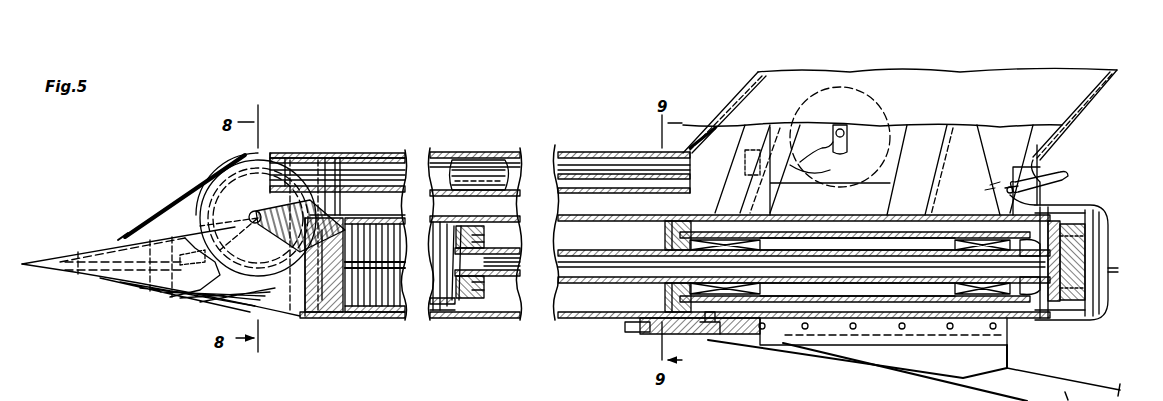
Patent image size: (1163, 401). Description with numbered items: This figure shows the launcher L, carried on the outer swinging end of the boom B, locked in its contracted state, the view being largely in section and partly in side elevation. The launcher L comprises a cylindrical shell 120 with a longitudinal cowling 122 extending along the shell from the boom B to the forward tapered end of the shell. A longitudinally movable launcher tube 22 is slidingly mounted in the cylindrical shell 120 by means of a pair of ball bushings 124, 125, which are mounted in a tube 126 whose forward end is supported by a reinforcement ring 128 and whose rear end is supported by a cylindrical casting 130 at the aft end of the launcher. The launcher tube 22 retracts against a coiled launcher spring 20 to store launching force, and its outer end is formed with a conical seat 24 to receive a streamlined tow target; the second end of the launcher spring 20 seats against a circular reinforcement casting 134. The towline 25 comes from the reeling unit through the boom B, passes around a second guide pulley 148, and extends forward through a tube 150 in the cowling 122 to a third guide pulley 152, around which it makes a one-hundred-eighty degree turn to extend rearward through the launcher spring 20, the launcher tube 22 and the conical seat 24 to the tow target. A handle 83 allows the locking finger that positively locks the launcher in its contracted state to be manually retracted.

The third guide pulley 152 is at (215, 176).
The longitudinal cowling 122 is at (338, 152).
The circular reinforcement casting 134 is at (324, 317).
The coiled launcher spring 20 is at (370, 292).
The tube 150 is at (472, 158).
The cylindrical shell 120 is at (514, 319).
The launcher L is at (500, 150).
The towline 25 is at (615, 172).
The launcher tube 22 is at (612, 283).
The tube 126 is at (806, 232).
The reinforcement ring 128 is at (664, 224).
The ball bushing 124 is at (752, 302).
The boom B is at (1098, 106).
The second guide pulley 148 is at (870, 118).
The handle 83 is at (1070, 172).
The conical seat 24 is at (1103, 252).
The cylindrical casting 130 is at (1096, 310).
The ball bushing 125 is at (1020, 306).